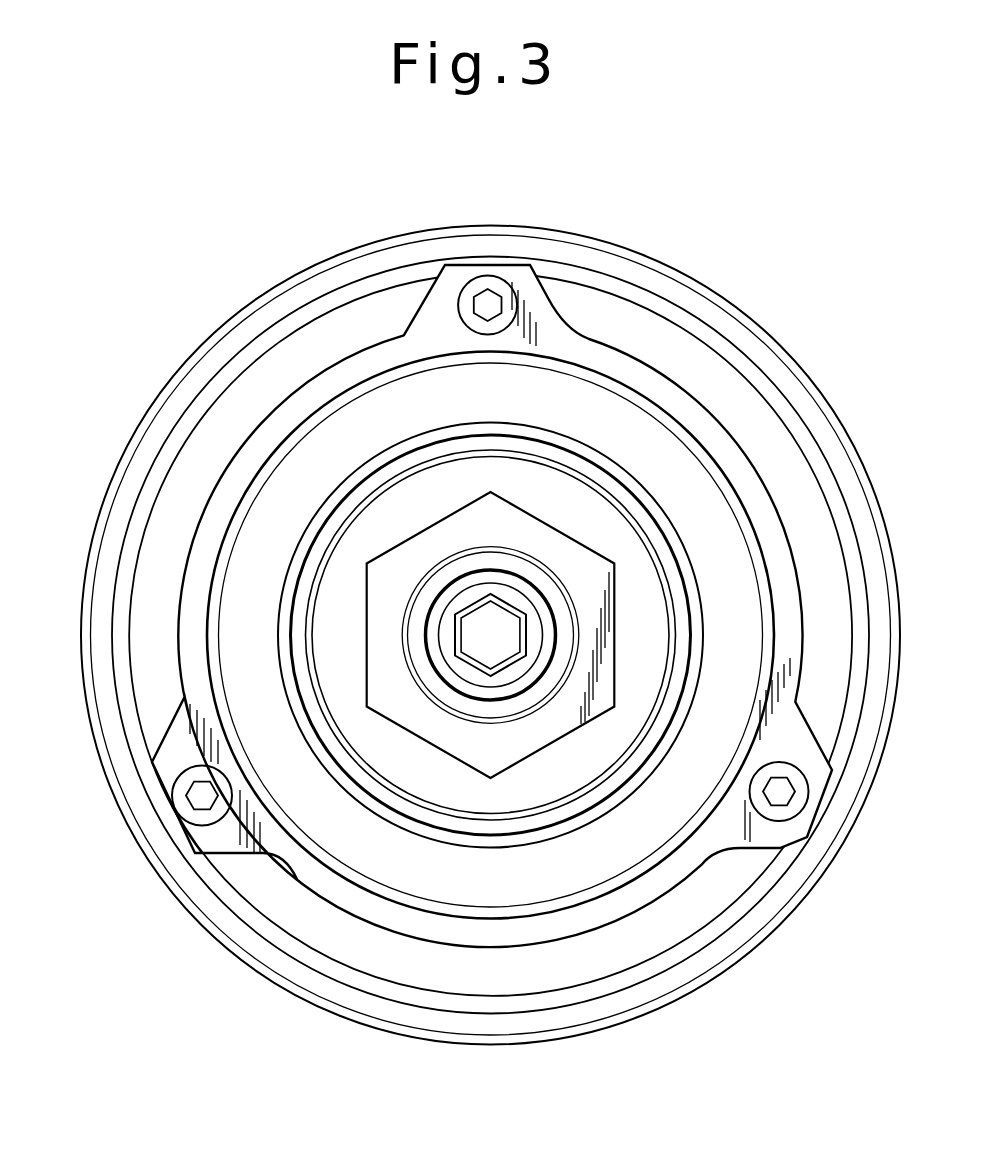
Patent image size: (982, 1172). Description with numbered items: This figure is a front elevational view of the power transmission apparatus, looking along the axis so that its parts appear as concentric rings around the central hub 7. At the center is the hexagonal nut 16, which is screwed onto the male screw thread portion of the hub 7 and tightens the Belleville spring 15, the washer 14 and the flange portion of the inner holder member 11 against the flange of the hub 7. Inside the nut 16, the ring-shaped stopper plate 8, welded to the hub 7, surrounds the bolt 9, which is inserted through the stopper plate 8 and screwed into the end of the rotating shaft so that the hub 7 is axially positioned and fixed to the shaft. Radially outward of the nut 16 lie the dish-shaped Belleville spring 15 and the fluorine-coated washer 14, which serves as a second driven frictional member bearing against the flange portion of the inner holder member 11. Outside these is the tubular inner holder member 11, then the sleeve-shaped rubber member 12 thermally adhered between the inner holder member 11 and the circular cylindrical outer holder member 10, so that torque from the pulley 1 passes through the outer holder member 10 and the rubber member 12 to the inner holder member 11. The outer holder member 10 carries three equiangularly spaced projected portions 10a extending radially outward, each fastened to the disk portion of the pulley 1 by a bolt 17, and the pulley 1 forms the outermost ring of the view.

The pulley 1 is at (598, 237).
The hub 7 is at (412, 628).
The stopper plate 8 is at (447, 597).
The bolt 9 is at (473, 632).
The outer holder member 10 is at (404, 346).
The projected portions 10a is at (512, 272).
The inner holder member 11 is at (660, 517).
The rubber member 12 is at (720, 550).
The washer 14 is at (615, 497).
The Belleville spring 15 is at (562, 498).
The nut 16 is at (435, 547).
The bolts 17 is at (481, 286).